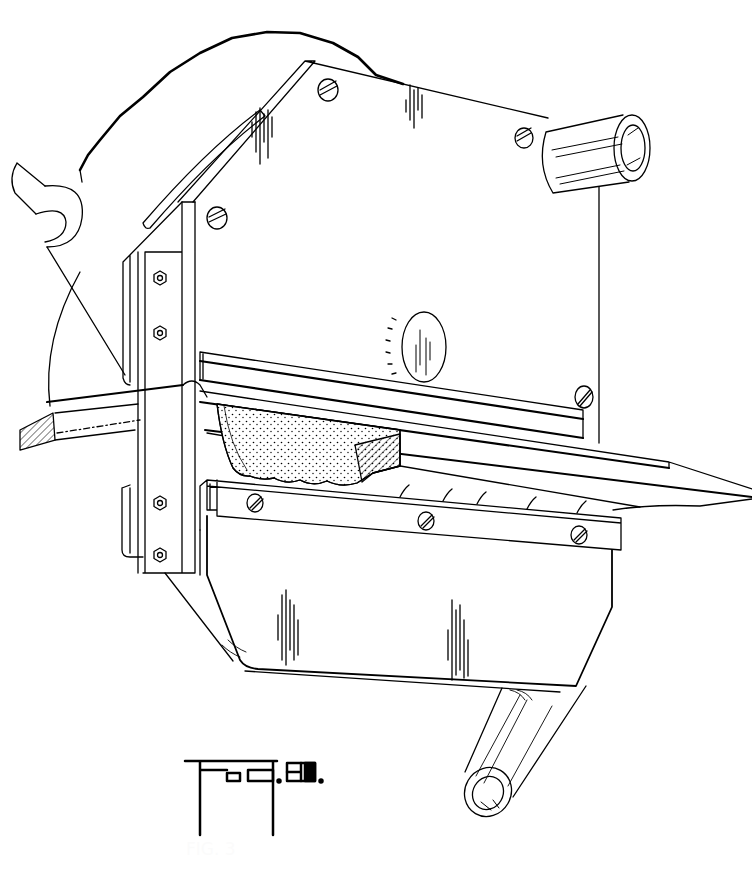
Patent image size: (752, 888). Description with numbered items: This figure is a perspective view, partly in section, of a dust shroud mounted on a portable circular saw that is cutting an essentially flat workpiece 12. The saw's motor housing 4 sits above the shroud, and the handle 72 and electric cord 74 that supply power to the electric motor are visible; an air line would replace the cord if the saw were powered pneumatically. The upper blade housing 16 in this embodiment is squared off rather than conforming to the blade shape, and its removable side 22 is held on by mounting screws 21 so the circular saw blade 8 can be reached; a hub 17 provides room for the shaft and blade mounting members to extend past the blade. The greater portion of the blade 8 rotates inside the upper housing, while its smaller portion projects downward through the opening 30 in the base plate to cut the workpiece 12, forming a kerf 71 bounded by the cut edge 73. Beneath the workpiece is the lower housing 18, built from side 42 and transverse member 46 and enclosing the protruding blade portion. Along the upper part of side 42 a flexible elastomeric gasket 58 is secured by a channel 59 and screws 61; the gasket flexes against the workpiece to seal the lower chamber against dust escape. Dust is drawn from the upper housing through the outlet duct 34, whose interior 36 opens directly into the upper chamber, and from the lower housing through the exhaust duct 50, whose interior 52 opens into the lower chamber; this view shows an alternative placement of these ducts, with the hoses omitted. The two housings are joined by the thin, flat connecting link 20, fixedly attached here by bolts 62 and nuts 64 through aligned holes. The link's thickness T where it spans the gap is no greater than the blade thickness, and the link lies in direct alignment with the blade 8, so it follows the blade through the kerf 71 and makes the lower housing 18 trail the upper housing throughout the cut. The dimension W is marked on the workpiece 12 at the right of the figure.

The motor housing 4 is at (74, 366).
The circular saw blade 8 is at (231, 460).
The workpiece 12 is at (27, 424).
The upper blade housing 16 is at (520, 250).
The hub 17 is at (440, 337).
The lower housing 18 is at (415, 616).
The connecting link 20 is at (153, 528).
The mounting screws 21 is at (338, 80).
The side 22 is at (393, 184).
The opening 30 is at (197, 402).
The outlet duct 34 is at (588, 130).
The interior of duct 36 is at (648, 146).
The side 42 is at (556, 658).
The transverse member 46 is at (203, 657).
The exhaust duct 50 is at (552, 743).
The interior of exhaust duct 52 is at (484, 802).
The gasket 58 is at (630, 510).
The channel 59 is at (505, 540).
The screws 61 is at (426, 531).
The bolts 62 is at (168, 280).
The nuts 64 is at (167, 283).
The kerf 71 is at (333, 487).
The handle 72 is at (150, 110).
The cut edge 73 is at (227, 448).
The electric cord 74 is at (22, 182).
The thickness of connecting link T is at (187, 465).
The width dimension W is at (710, 506).